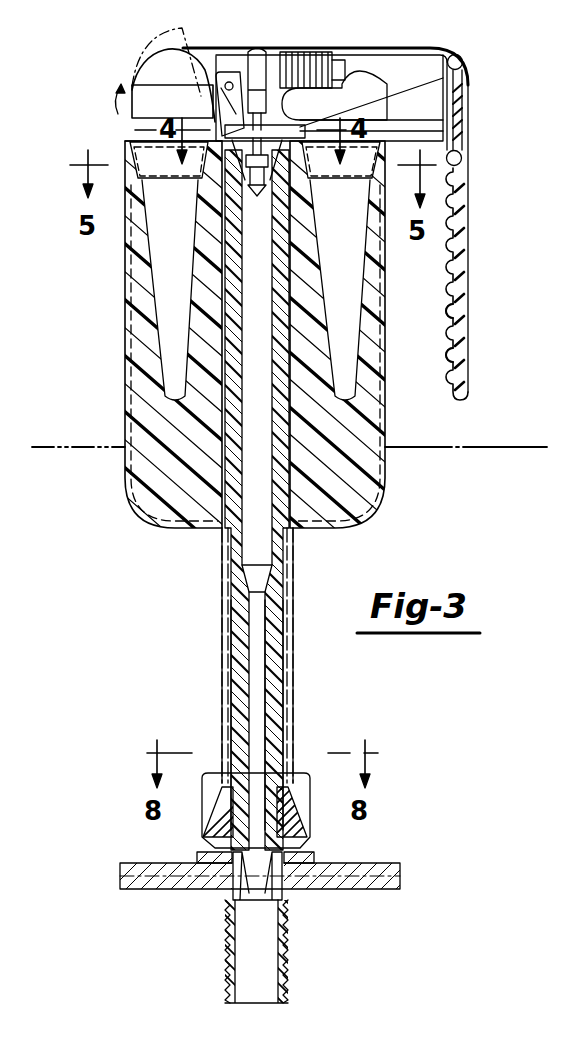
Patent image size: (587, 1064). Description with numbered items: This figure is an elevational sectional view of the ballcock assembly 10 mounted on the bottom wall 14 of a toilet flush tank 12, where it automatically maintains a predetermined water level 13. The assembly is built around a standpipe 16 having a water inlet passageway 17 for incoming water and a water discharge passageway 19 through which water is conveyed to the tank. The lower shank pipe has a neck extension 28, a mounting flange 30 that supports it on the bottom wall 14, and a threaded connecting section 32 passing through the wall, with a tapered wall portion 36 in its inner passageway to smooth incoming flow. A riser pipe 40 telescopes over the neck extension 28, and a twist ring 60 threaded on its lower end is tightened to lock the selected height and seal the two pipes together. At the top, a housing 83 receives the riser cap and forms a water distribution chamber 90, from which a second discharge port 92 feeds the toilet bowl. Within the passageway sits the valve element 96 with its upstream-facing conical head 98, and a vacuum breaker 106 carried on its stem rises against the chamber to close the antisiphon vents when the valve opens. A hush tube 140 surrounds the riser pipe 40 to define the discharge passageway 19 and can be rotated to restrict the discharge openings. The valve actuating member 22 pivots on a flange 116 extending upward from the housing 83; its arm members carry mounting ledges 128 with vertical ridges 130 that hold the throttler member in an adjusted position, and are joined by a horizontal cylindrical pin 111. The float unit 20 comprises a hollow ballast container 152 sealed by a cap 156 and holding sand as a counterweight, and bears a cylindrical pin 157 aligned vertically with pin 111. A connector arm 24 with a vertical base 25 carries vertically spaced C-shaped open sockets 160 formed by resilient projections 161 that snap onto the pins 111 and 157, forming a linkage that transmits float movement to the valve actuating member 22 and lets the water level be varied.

The ballcock assembly 10 is at (86, 333).
The toilet flush tank 12 is at (44, 545).
The water level 13 is at (481, 449).
The bottom wall 14 is at (376, 863).
The standpipe 16 is at (315, 559).
The water inlet passageway 17 is at (257, 448).
The water discharge passageway 19 is at (230, 617).
The float unit 20 is at (378, 510).
The valve actuating member 22 is at (424, 49).
The connector arm 24 is at (470, 130).
The vertical base 25 is at (470, 280).
The neck extension 28 is at (268, 688).
The mounting flange 30 is at (310, 852).
The threaded connecting section 32 is at (290, 966).
The tapered wall portion 36 is at (268, 890).
The riser pipe 40 is at (280, 638).
The twist ring 60 is at (313, 815).
The housing 83 is at (165, 75).
The water distribution chamber 90 is at (322, 95).
The second discharge port 92 is at (386, 102).
The valve element 96 is at (253, 200).
The conical head 98 is at (282, 233).
The vacuum breaker 106 is at (213, 193).
The cylindrical pin 111 is at (463, 68).
The flange 116 is at (262, 42).
The mounting ledge 128 is at (300, 55).
The vertical ridge 130 is at (335, 54).
The hush tube 140 is at (298, 592).
The ballast container 152 is at (387, 444).
The cap 156 is at (125, 141).
The cylindrical pin 157 is at (462, 160).
The open socket 160 is at (449, 309).
The resilient projection 161 is at (450, 342).